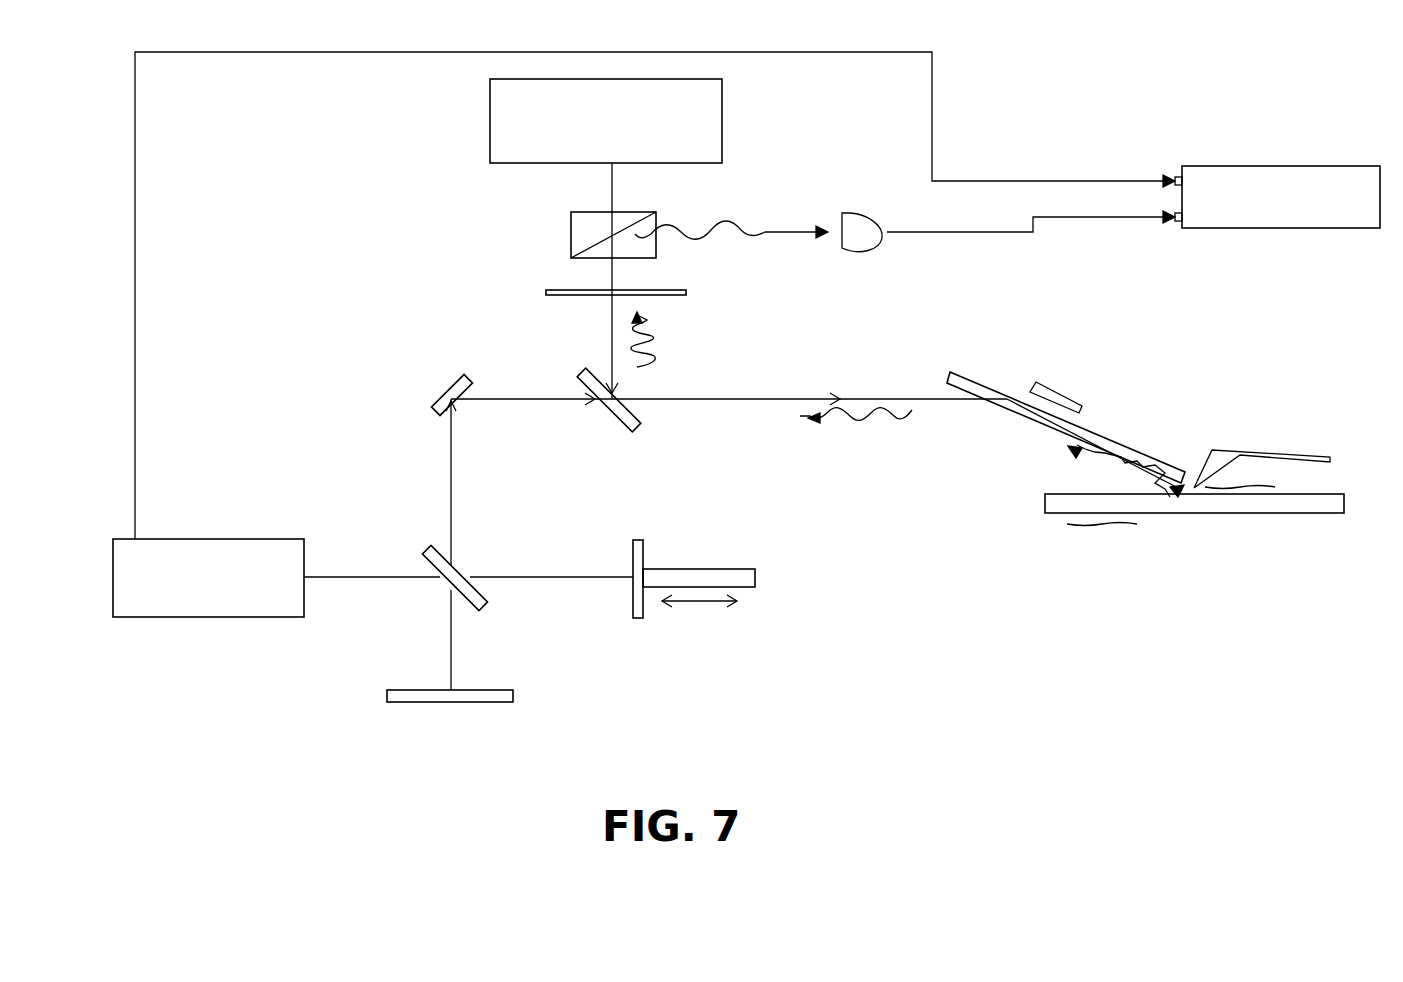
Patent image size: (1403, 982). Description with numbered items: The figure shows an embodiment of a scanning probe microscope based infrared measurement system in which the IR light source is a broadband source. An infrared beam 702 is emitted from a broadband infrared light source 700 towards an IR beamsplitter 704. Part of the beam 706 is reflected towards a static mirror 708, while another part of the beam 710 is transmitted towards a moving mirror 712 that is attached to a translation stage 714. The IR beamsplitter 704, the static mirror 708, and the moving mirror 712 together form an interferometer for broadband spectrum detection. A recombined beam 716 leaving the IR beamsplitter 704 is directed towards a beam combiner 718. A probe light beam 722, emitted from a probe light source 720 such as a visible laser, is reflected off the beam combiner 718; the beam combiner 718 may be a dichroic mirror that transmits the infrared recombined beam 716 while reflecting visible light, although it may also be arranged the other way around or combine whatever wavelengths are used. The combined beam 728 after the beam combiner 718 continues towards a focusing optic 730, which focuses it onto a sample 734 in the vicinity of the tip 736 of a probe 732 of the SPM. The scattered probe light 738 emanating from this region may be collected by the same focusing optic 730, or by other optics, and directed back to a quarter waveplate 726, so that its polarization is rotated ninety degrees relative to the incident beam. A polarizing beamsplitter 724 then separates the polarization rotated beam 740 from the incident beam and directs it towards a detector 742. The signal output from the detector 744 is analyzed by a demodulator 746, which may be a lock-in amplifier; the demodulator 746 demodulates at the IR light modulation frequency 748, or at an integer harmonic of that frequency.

The broadband infrared light source 700 is at (208, 578).
The infrared beam 702 is at (372, 573).
The IR beamsplitter 704 is at (432, 572).
The part of the beam 706 is at (426, 640).
The static mirror 708 is at (418, 700).
The part of the beam 710 is at (551, 572).
The moving mirror 712 is at (625, 571).
The translation stage 714 is at (699, 579).
The recombined beam 716 is at (459, 469).
The beam combiner 718 is at (729, 416).
The probe light source 720 is at (606, 121).
The probe light beam 722 is at (624, 281).
The polarizing beamsplitter 724 is at (590, 235).
The quarter waveplate 726 is at (636, 325).
The combined beam 728 is at (856, 402).
The focusing optic 730 is at (1066, 432).
The probe 732 is at (1262, 461).
The sample 734 is at (1194, 528).
The tip 736 is at (1258, 480).
The scattered probe light 738 is at (1092, 471).
The polarization rotated beam 740 is at (731, 224).
The detector 742 is at (857, 226).
The signal output from the detector 744 is at (1034, 235).
The demodulator 746 is at (1281, 197).
The IR light modulation frequency 748 is at (658, 295).